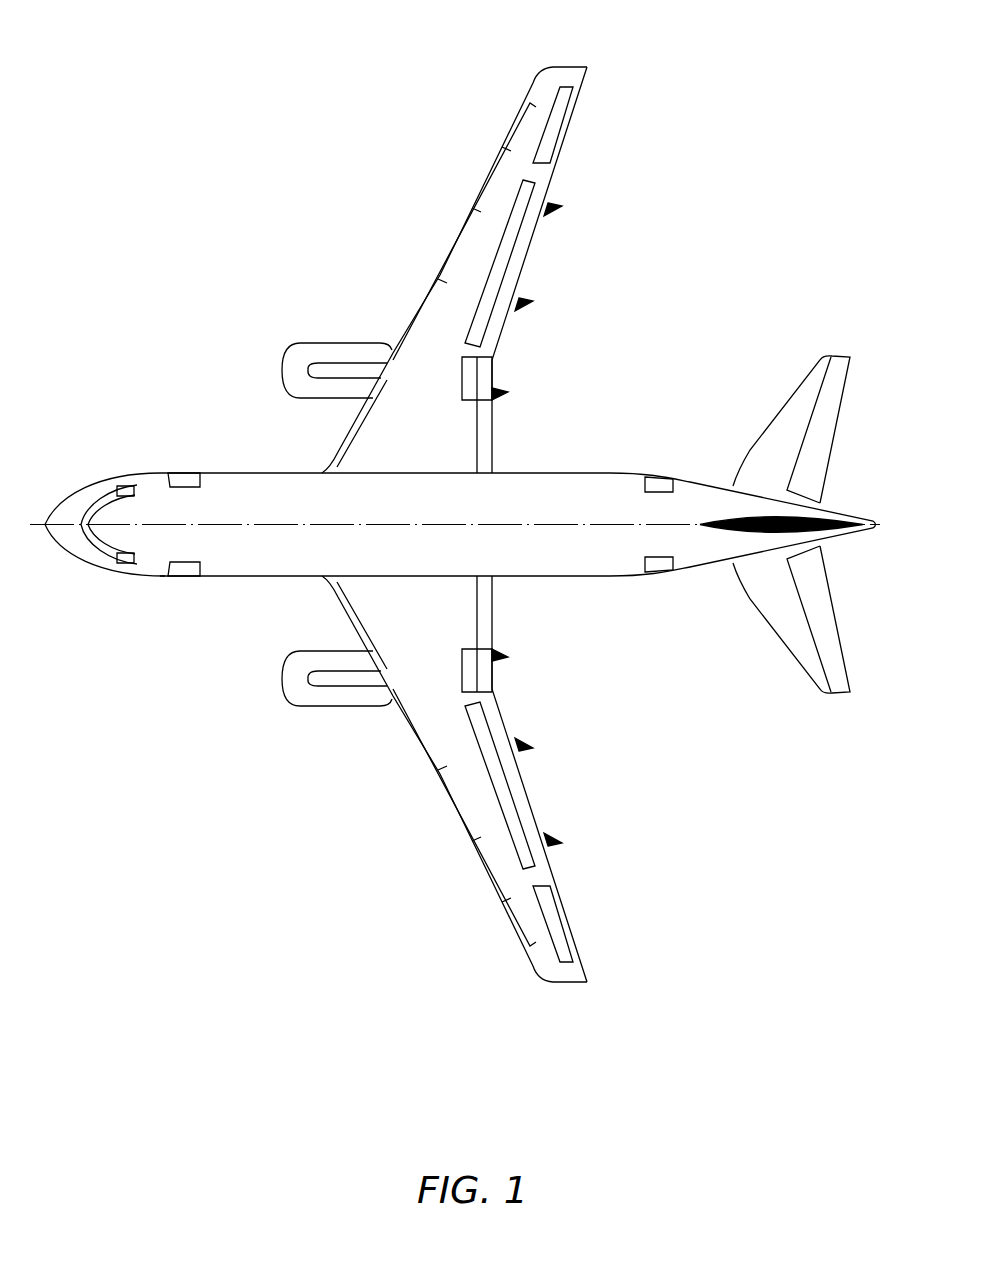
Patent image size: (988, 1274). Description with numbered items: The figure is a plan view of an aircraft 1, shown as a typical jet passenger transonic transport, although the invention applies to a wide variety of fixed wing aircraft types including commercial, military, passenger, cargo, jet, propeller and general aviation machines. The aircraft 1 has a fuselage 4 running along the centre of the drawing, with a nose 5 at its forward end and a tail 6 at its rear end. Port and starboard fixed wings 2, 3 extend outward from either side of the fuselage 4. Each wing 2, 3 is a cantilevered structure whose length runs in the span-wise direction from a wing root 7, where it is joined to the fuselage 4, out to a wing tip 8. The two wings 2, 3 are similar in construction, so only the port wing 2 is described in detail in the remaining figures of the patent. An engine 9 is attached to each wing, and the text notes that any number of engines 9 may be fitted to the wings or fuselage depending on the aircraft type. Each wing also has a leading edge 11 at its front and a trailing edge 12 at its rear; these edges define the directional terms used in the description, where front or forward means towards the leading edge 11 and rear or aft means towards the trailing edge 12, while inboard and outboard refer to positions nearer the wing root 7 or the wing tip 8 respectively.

The aircraft 1 is at (217, 838).
The port fixed wing 2 is at (478, 783).
The starboard fixed wing 3 is at (500, 210).
The fuselage 4 is at (260, 490).
The nose 5 is at (45, 525).
The tail 6 is at (871, 524).
The wing root 7 is at (440, 472).
The wing tip 8 is at (571, 65).
The engine 9 is at (295, 362).
The leading edge 11 is at (427, 295).
The trailing edge 12 is at (521, 277).